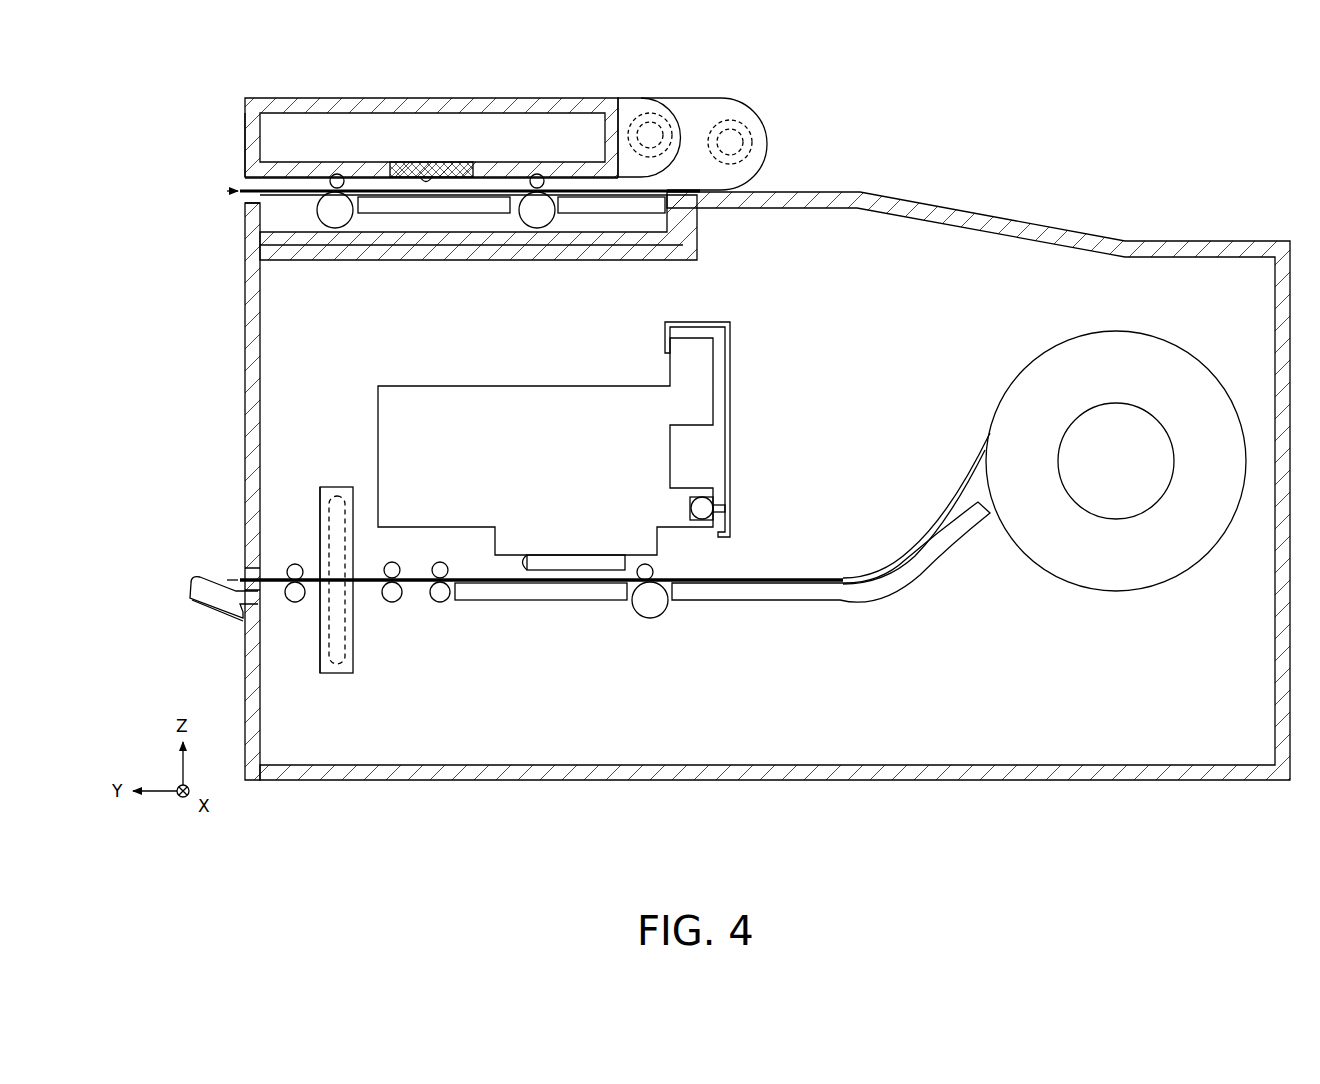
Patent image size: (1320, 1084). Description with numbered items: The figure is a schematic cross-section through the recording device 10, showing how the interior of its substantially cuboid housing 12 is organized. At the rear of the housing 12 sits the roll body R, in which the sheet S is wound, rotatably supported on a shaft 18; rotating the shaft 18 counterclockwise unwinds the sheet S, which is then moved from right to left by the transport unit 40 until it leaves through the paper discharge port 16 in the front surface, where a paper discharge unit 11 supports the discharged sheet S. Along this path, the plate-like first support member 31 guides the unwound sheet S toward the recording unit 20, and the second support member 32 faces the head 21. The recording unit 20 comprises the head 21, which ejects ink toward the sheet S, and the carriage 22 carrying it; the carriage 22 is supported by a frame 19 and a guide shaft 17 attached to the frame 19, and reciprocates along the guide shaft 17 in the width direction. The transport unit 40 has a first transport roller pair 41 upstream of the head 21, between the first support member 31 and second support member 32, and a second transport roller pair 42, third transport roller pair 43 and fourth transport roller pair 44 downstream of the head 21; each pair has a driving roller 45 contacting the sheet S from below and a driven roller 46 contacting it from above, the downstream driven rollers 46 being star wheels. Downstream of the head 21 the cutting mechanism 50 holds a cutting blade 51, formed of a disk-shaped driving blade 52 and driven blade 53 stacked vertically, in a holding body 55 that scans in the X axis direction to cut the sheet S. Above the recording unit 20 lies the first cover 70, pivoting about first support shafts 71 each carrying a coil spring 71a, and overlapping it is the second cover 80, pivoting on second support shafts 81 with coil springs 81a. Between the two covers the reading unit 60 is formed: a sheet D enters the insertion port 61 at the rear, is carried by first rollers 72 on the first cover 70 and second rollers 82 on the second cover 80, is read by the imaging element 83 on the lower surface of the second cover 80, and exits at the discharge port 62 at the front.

The recording device 10 is at (162, 103).
The paper discharge unit 11 is at (224, 612).
The housing 12 is at (1105, 243).
The paper discharge port 16 is at (240, 571).
The guide shaft 17 is at (700, 497).
The shaft 18 is at (1106, 402).
The frame 19 is at (731, 380).
The recording unit 20 is at (470, 322).
The head 21 is at (524, 556).
The carriage 22 is at (491, 385).
The first support member 31 is at (878, 601).
The second support member 32 is at (502, 602).
The transport unit 40 is at (684, 686).
The first transport roller pair 41 is at (675, 620).
The second transport roller pair 42 is at (458, 628).
The third transport roller pair 43 is at (403, 628).
The fourth transport roller pair 44 is at (302, 613).
The driving roller 45 is at (290, 603).
The driven roller 46 is at (295, 564).
The cutting mechanism 50 is at (318, 475).
The cutting blade 51 is at (360, 703).
The driving blade 52 is at (337, 674).
The driven blade 53 is at (337, 487).
The holding body 55 is at (318, 497).
The reading unit 60 is at (492, 113).
The insertion port 61 is at (652, 184).
The discharge port 62 is at (230, 188).
The first cover 70 is at (245, 232).
The first support shaft 71 is at (760, 113).
The coil spring 71a is at (728, 120).
The first roller 72 is at (336, 229).
The second cover 80 is at (245, 128).
The second support shaft 81 is at (672, 112).
The coil spring 81a is at (655, 113).
The second roller 82 is at (338, 174).
The imaging element 83 is at (428, 175).
The sheet D is at (308, 186).
The sheet S is at (912, 541).
The roll body R is at (1112, 592).